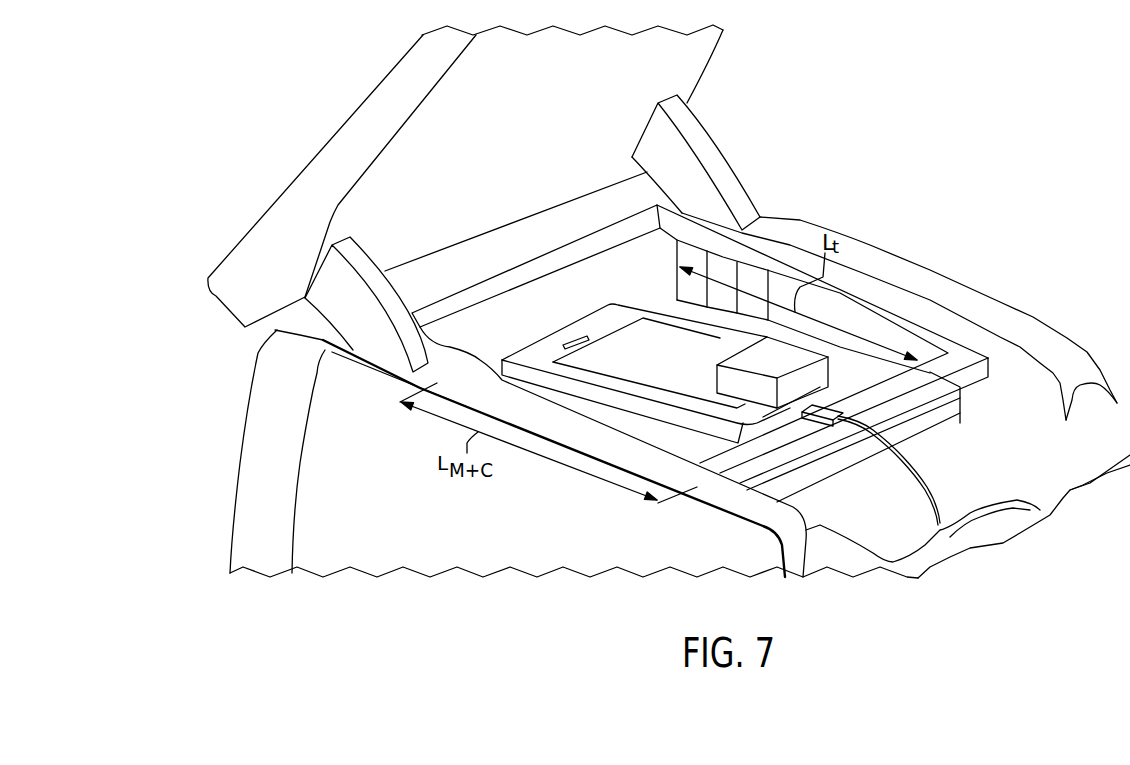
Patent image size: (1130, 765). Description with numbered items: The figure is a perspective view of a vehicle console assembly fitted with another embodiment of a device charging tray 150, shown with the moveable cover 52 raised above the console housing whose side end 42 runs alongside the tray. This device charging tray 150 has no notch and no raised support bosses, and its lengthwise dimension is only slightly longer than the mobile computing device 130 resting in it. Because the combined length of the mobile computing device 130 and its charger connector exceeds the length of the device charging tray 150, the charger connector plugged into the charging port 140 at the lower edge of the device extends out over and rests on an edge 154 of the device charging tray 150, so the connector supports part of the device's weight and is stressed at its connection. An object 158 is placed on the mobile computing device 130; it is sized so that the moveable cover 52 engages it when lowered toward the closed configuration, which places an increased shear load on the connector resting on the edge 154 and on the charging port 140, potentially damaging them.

The moveable cover 52 is at (310, 140).
The side end 42 is at (707, 497).
The device charging tray 150 is at (861, 274).
The edge 154 is at (963, 362).
The mobile computing device 130 is at (624, 336).
The charging port 140 is at (821, 421).
The object 158 is at (728, 361).